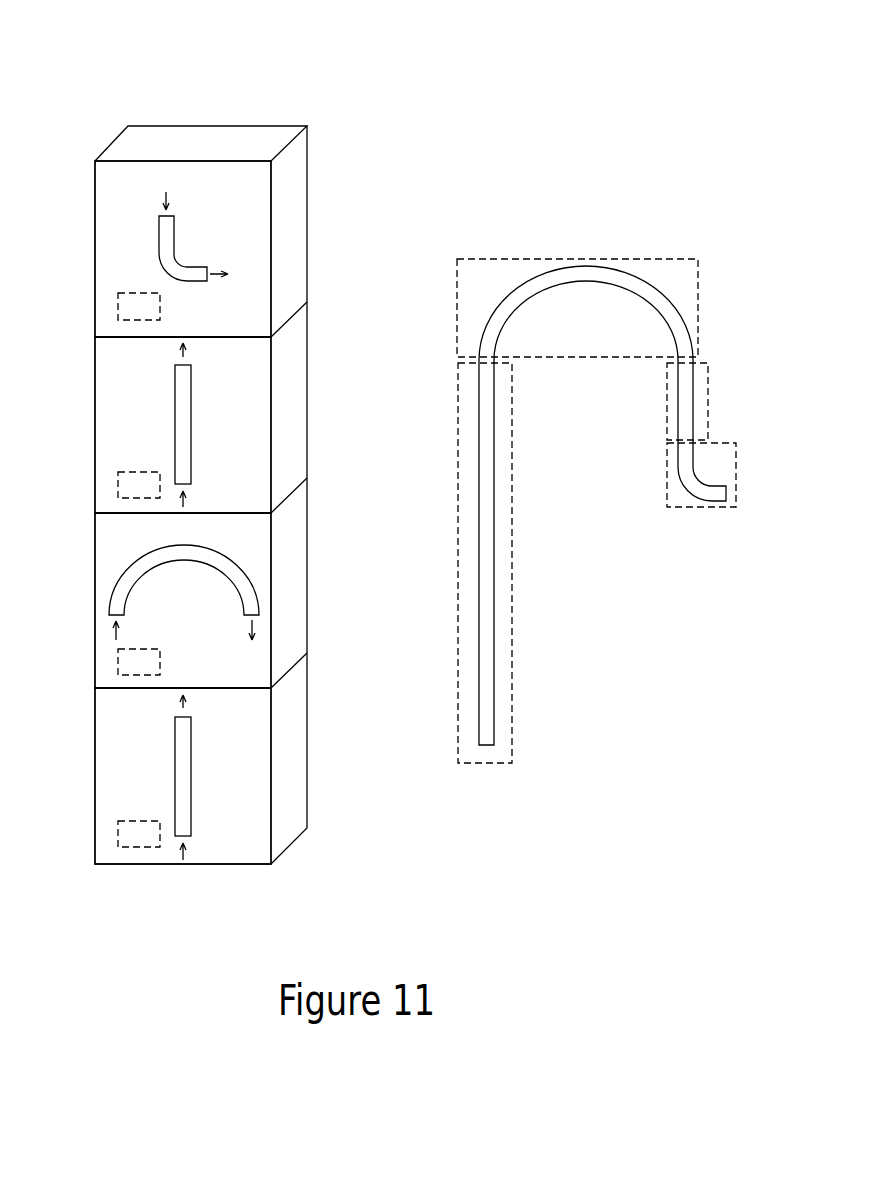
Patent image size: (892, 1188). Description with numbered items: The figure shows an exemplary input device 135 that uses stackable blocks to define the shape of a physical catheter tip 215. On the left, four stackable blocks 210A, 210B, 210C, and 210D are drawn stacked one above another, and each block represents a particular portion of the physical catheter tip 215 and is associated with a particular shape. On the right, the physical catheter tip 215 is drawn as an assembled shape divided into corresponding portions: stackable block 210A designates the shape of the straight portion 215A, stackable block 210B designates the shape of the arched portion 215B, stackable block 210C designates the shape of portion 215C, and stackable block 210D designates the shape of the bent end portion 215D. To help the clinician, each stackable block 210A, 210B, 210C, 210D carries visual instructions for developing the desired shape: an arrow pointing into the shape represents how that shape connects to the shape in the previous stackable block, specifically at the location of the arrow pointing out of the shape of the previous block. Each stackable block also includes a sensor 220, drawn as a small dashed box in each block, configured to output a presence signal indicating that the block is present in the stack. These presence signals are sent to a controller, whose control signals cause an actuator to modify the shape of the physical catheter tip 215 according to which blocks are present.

The input device 135 is at (235, 88).
The stackable block 210A is at (95, 772).
The stackable block 210B is at (95, 581).
The stackable block 210C is at (95, 412).
The stackable block 210D is at (95, 251).
The sensor 220 is at (118, 305).
The physical catheter tip 215 is at (657, 232).
The portion of the physical catheter tip 215A is at (515, 629).
The portion of the physical catheter tip 215B is at (455, 315).
The portion of the physical catheter tip 215C is at (708, 399).
The portion of the physical catheter tip 215D is at (698, 508).